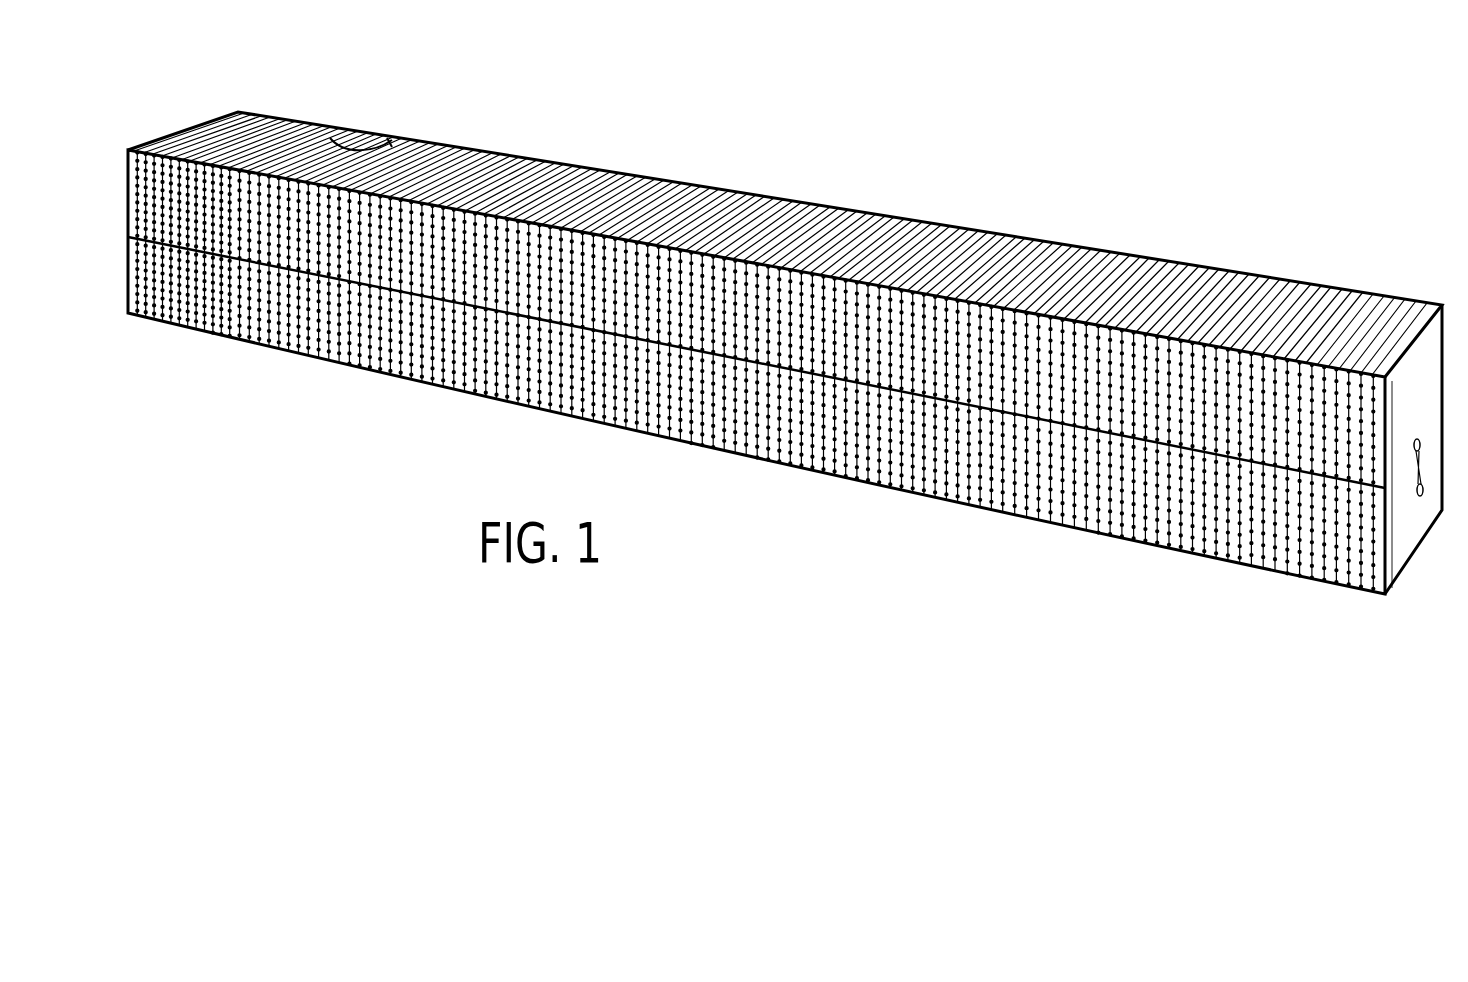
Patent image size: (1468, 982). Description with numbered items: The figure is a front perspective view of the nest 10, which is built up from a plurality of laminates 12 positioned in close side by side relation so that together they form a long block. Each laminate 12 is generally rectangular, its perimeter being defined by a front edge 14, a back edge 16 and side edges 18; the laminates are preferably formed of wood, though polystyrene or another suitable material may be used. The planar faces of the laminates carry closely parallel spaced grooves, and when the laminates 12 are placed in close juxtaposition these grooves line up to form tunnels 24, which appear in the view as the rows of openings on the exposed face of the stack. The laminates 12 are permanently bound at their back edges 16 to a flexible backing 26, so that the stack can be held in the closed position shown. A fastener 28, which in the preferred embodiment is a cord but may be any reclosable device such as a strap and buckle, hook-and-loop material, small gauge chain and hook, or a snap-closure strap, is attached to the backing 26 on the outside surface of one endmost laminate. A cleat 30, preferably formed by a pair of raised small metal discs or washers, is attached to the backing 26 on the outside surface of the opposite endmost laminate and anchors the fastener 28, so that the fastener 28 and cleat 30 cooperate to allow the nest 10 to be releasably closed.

The nest 10 is at (911, 170).
The laminate 12 is at (455, 385).
The front edge 14 is at (803, 460).
The back edge 16 is at (330, 138).
The side edge 18 is at (693, 210).
The tunnel 24 is at (985, 498).
The flexible backing 26 is at (1428, 349).
The fastener 28 is at (1416, 489).
The cleat 30 is at (1424, 442).